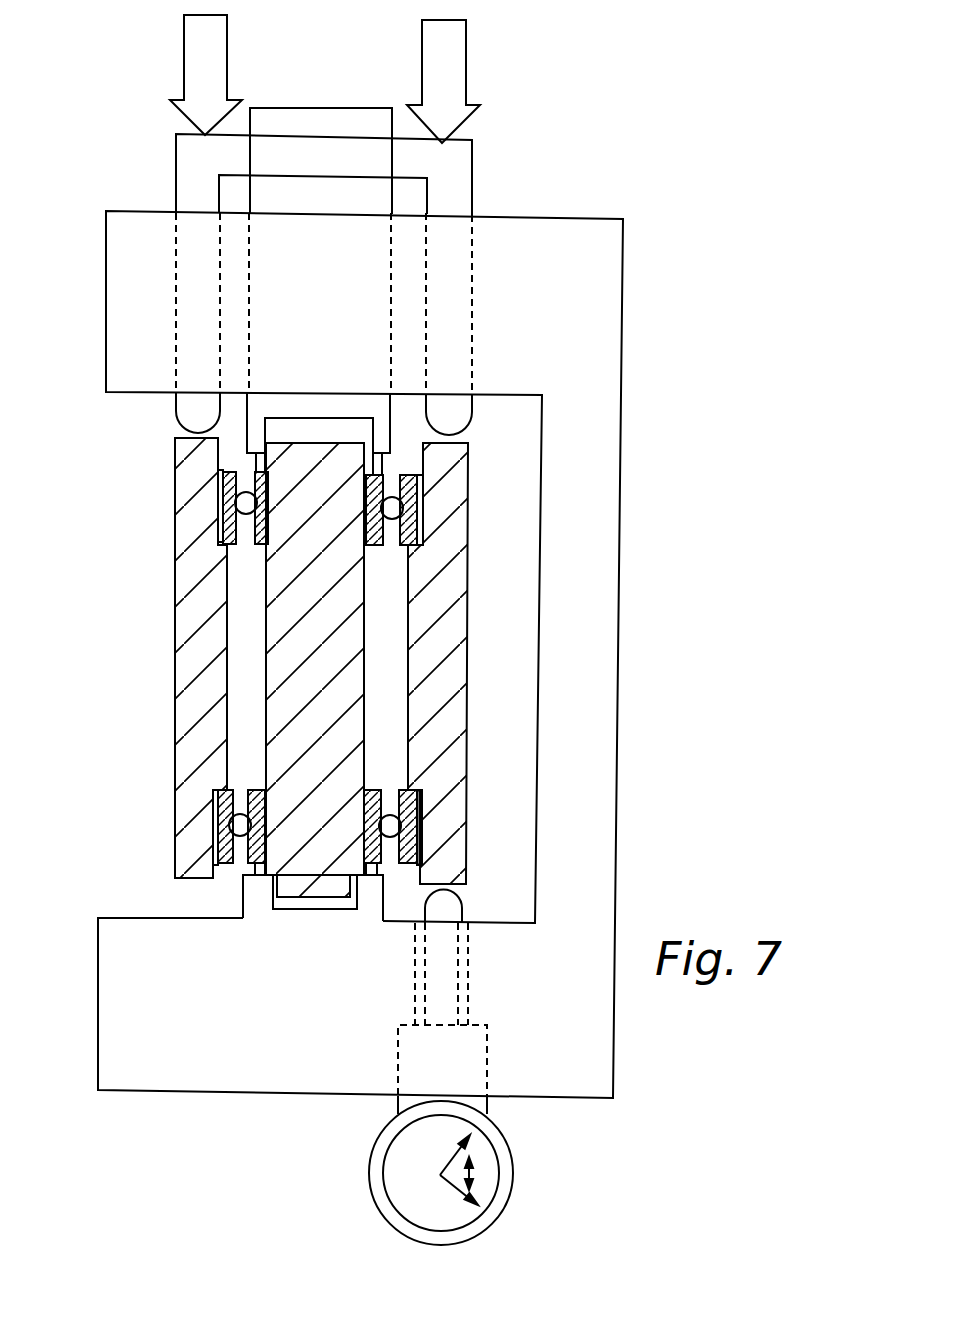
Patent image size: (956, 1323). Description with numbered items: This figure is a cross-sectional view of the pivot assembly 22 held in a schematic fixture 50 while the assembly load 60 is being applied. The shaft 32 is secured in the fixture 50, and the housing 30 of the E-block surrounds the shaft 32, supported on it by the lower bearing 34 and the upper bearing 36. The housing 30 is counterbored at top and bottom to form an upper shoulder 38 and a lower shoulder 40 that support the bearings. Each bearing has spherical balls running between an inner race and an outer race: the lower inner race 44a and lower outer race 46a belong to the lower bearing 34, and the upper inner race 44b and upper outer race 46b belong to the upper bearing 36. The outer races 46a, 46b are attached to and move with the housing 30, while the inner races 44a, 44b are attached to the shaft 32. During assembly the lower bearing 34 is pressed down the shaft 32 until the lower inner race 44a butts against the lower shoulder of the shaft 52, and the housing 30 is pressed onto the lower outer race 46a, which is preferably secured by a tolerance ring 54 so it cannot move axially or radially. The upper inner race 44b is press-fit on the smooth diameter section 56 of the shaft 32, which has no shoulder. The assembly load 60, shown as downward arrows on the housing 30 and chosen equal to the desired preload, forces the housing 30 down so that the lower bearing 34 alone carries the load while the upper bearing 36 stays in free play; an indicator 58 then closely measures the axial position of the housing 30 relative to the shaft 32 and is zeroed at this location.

The pivot assembly 22 is at (136, 526).
The housing 30 is at (197, 640).
The shaft 32 is at (310, 868).
The lower bearing 34 is at (386, 772).
The upper bearing 36 is at (386, 554).
The upper shoulder 38 is at (410, 552).
The lower shoulder 40 is at (420, 792).
The lower inner race 44a is at (250, 906).
The upper inner race 44b is at (258, 450).
The lower outer race 46a is at (228, 868).
The upper outer race 46b is at (222, 472).
The fixture 50 is at (628, 593).
The lower shoulder of the shaft 52 is at (355, 908).
The tolerance ring 54 is at (419, 500).
The smooth diameter section 56 is at (400, 704).
The indicator 58 is at (527, 1157).
The assembly load 60 is at (445, 58).